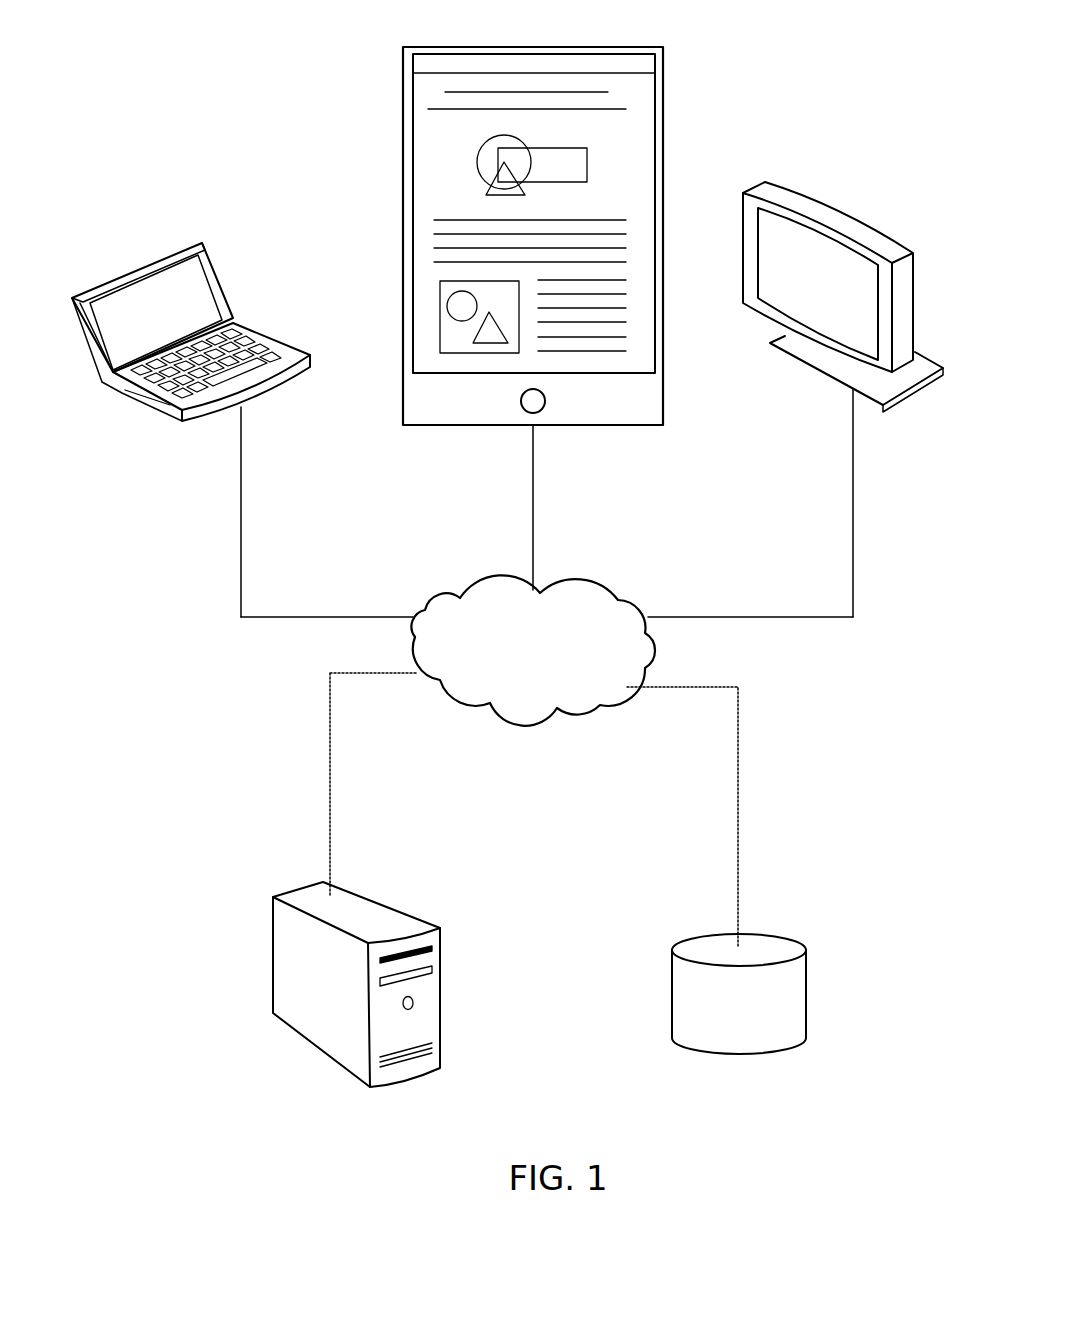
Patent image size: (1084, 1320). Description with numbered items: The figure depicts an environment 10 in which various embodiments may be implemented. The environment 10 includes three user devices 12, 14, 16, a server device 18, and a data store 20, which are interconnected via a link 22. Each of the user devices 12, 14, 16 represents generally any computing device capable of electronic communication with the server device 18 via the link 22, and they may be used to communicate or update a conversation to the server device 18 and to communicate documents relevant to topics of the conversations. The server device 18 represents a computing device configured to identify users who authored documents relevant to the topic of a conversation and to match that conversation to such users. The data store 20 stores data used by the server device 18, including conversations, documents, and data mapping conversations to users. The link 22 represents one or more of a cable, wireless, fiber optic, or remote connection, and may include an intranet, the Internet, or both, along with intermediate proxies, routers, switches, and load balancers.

The environment 10 is at (165, 140).
The user device 12 is at (468, 425).
The user device 14 is at (202, 243).
The user device 16 is at (852, 208).
The server device 18 is at (365, 902).
The data store 20 is at (768, 948).
The link 22 is at (595, 580).